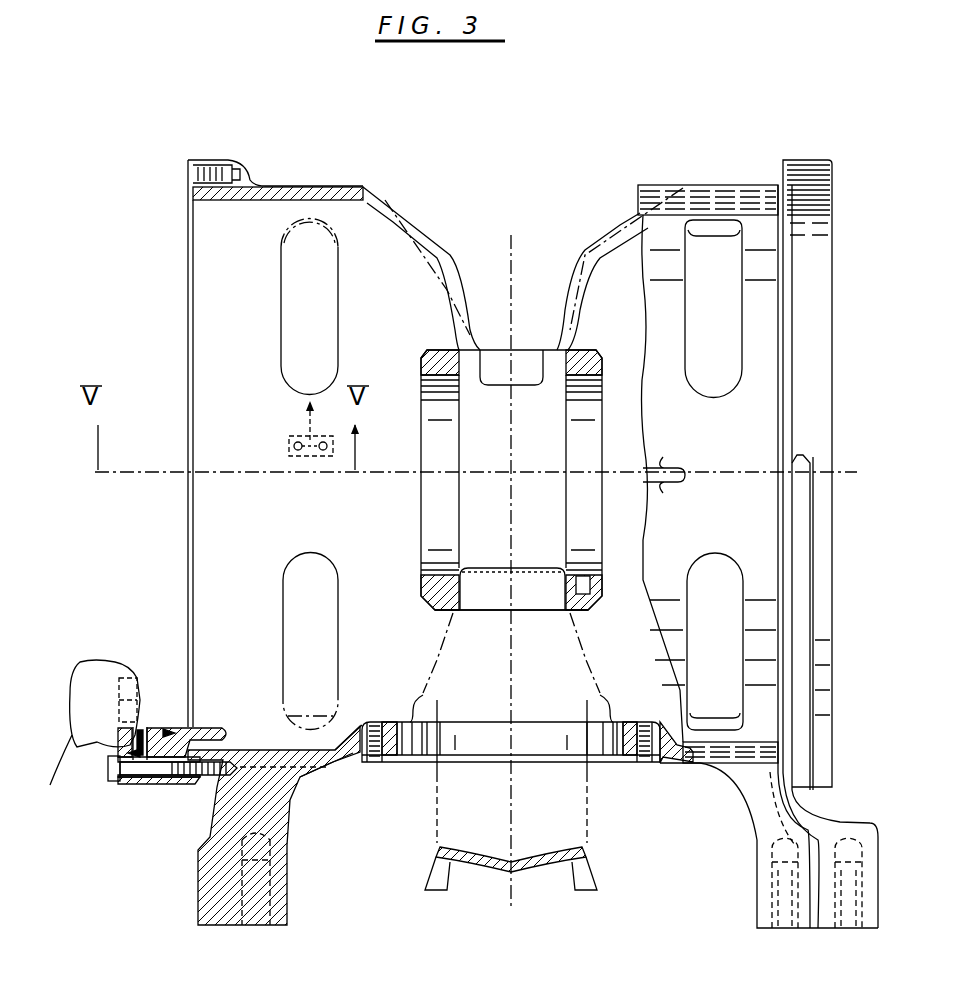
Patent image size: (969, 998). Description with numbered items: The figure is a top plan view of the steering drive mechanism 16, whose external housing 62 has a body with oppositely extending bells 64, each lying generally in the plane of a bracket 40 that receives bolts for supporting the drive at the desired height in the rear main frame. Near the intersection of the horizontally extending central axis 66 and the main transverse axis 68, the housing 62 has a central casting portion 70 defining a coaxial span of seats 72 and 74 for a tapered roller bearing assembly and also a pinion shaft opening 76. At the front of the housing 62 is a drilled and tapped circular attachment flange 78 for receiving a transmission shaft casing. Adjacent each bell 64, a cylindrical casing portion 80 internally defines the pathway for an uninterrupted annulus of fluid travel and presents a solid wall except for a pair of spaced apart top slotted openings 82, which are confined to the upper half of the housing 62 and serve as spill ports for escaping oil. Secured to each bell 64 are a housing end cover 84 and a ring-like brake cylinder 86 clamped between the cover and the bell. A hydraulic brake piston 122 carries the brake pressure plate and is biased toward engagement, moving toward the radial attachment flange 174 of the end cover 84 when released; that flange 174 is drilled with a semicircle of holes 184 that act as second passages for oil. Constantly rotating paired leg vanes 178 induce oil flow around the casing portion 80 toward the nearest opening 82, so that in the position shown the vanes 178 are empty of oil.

The steering drive mechanism 16 is at (168, 142).
The brackets 40 is at (212, 898).
The external housing 62 is at (133, 783).
The bells 64 is at (788, 172).
The horizontally extending central axis 66 is at (515, 823).
The main transverse axis 68 is at (544, 470).
The central casting portion 70 is at (452, 612).
The seat 72 is at (430, 573).
The seat 74 is at (575, 573).
The pinion shaft opening 76 is at (460, 588).
The attachment flange 78 is at (395, 765).
The cylindrical casing portion 80 is at (280, 750).
The slotted openings 82 is at (280, 303).
The housing end cover 84 is at (90, 743).
The brake cylinder 86 is at (147, 783).
The hydraulic brake piston 122 is at (150, 727).
The radial attachment flange 174 is at (130, 780).
The leg vanes 178 is at (280, 452).
The holes 184 is at (157, 690).